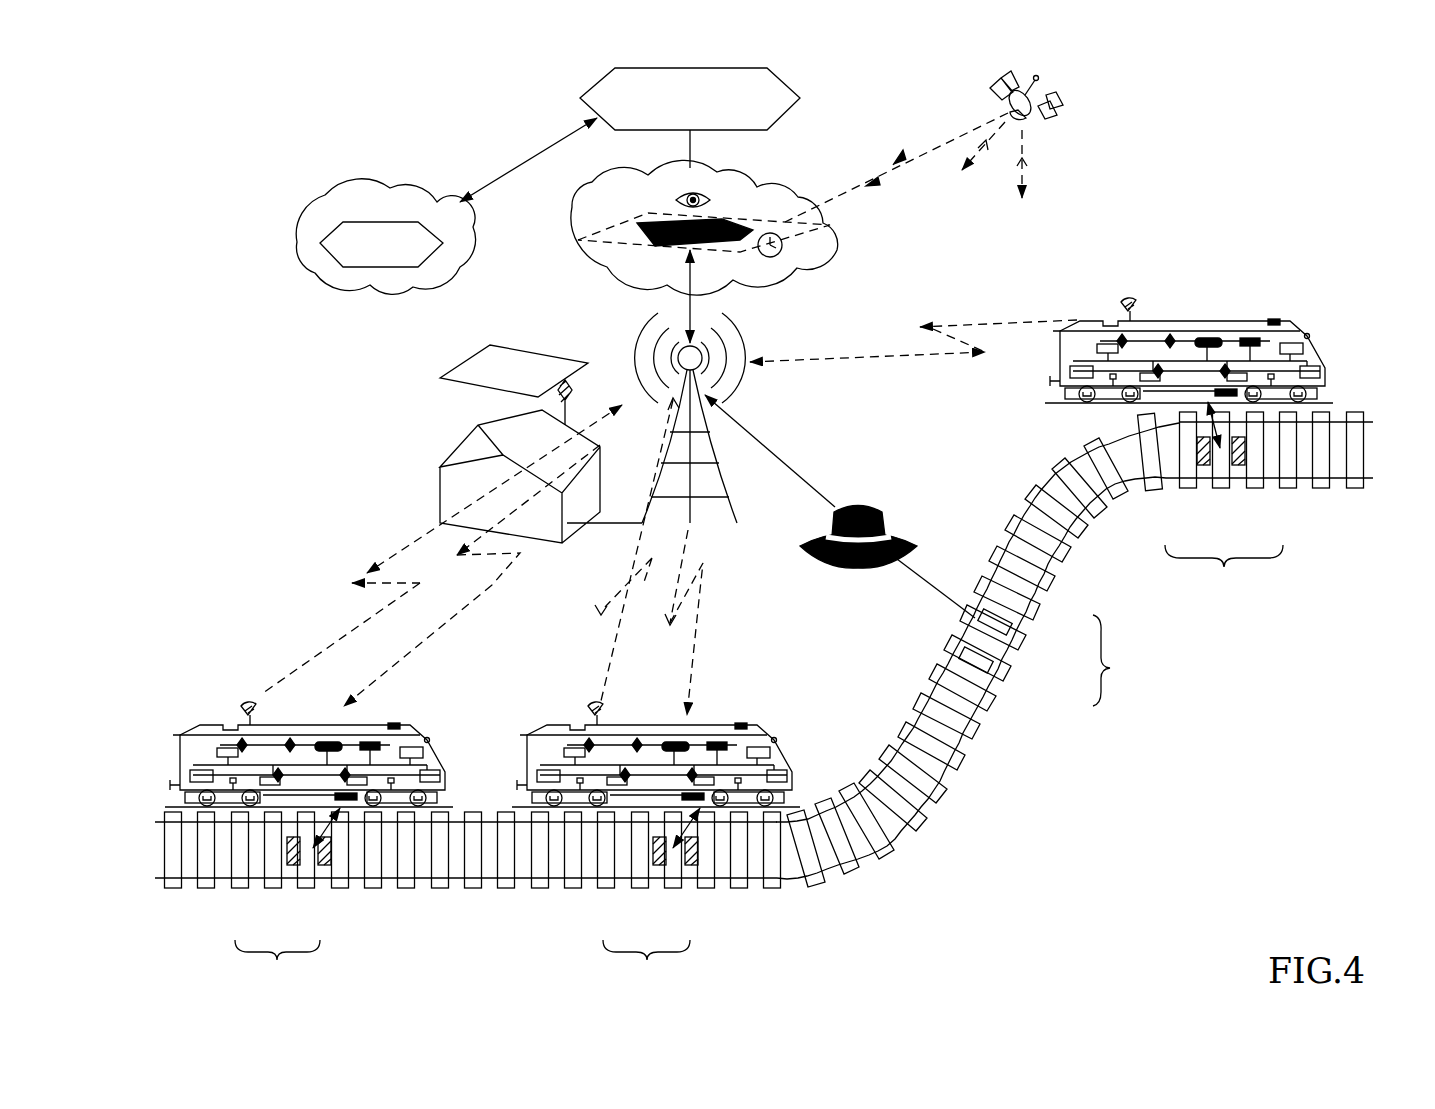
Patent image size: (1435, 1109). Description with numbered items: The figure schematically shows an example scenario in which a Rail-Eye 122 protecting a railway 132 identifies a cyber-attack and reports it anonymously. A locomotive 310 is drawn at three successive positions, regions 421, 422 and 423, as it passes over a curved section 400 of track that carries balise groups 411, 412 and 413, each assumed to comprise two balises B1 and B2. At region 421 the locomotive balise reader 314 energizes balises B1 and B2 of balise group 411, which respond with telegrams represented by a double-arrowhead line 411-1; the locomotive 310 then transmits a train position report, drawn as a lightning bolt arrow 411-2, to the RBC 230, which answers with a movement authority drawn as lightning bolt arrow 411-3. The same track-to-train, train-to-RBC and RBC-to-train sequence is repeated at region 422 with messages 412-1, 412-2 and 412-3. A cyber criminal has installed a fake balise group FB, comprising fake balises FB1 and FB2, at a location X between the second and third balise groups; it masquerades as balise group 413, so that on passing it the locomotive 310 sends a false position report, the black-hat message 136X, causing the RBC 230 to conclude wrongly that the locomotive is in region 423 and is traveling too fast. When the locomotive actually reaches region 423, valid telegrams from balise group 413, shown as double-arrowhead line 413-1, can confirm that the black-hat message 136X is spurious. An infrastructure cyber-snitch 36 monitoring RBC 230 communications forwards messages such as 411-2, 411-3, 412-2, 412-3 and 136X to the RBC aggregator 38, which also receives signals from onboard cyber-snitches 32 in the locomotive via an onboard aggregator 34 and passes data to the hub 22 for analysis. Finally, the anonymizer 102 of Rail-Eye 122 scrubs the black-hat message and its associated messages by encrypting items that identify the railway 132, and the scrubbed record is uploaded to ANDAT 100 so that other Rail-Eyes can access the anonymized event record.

The ANDAT 100 is at (362, 218).
The anonymizer 102 is at (583, 86).
The hub 22 is at (758, 206).
The Rail-Eye 122 is at (838, 100).
The railway 132 is at (299, 450).
The RBC 230 is at (482, 436).
The infrastructure cyber-snitch 36 is at (570, 392).
The RBC aggregator 38 is at (514, 381).
The locomotive 310 is at (441, 735).
The onboard cyber-snitches 32 is at (240, 745).
The onboard aggregator 34 is at (325, 742).
The balise reader 314 is at (348, 801).
The balise B1 is at (290, 858).
The balise B2 is at (322, 860).
The balise group 411 is at (277, 964).
The balise group 412 is at (646, 964).
The balise group 413 is at (1224, 572).
The double-arrowhead line 411-1 is at (300, 822).
The lightning bolt arrow 411-2 is at (369, 566).
The lightning bolt arrow 411-3 is at (492, 590).
The message 412-1 is at (703, 828).
The message 412-2 is at (602, 656).
The message 412-3 is at (706, 590).
The double-arrowhead line 413-1 is at (1215, 412).
The region 421 is at (338, 922).
The region 422 is at (704, 932).
The region 423 is at (1286, 582).
The curved section of track 400 is at (958, 788).
The fake balise FB1 is at (1008, 614).
The fake balise FB2 is at (990, 652).
The fake balise group FB is at (1115, 660).
The location X is at (1103, 720).
The black-hat message 136X is at (860, 503).